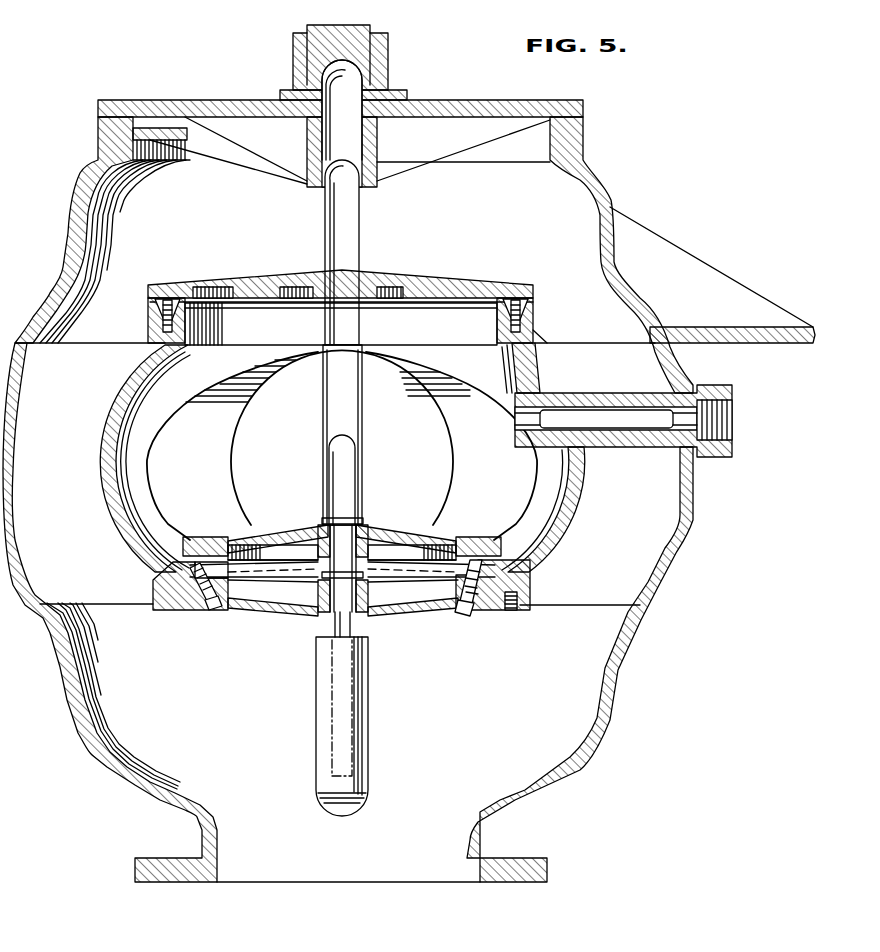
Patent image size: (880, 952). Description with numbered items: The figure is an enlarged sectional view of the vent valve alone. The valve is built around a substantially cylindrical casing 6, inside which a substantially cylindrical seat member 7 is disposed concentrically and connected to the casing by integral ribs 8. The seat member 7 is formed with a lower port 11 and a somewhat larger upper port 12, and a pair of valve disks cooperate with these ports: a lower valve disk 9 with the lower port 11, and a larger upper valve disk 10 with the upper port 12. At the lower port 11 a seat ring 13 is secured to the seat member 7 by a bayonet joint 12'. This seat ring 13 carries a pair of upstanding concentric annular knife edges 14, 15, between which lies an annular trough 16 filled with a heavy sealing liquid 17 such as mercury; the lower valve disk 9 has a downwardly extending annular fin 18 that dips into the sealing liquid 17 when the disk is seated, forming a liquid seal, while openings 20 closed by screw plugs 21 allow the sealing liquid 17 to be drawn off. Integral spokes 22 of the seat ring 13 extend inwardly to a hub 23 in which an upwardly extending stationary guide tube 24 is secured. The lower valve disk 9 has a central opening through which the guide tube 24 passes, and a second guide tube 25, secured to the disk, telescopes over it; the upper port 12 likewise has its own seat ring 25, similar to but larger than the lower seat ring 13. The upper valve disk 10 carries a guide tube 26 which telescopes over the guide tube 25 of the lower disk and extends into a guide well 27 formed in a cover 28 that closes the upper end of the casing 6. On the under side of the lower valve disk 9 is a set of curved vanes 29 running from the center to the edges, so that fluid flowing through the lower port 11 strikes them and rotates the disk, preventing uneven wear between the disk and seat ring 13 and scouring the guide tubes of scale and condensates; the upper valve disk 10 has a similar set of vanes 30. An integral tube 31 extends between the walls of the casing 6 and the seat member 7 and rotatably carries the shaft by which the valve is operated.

The casing 6 is at (666, 573).
The seat member 7 is at (574, 508).
The ribs 8 is at (105, 597).
The valve disk 9 is at (440, 540).
The valve disk 10 is at (452, 278).
The lower port 11 is at (246, 606).
The upper port 12 is at (341, 324).
The bayonet joint 12' is at (192, 602).
The seat ring 13 is at (202, 614).
The knife edge 14 is at (503, 566).
The knife edge 15 is at (450, 566).
The annular trough 16 is at (500, 537).
The sealing liquid 17 is at (492, 605).
The annular fin 18 is at (476, 556).
The openings 20 is at (479, 616).
The screw plugs 21 is at (464, 614).
The spokes 22 is at (272, 605).
The hub 23 is at (328, 612).
The guide tube 24 is at (353, 613).
The guide tube 25 is at (530, 318).
The guide tube 26 is at (362, 238).
The guide well 27 is at (350, 138).
The cover 28 is at (444, 100).
The curved vanes 29 is at (283, 545).
The vanes 30 is at (268, 285).
The tube 31 is at (604, 393).